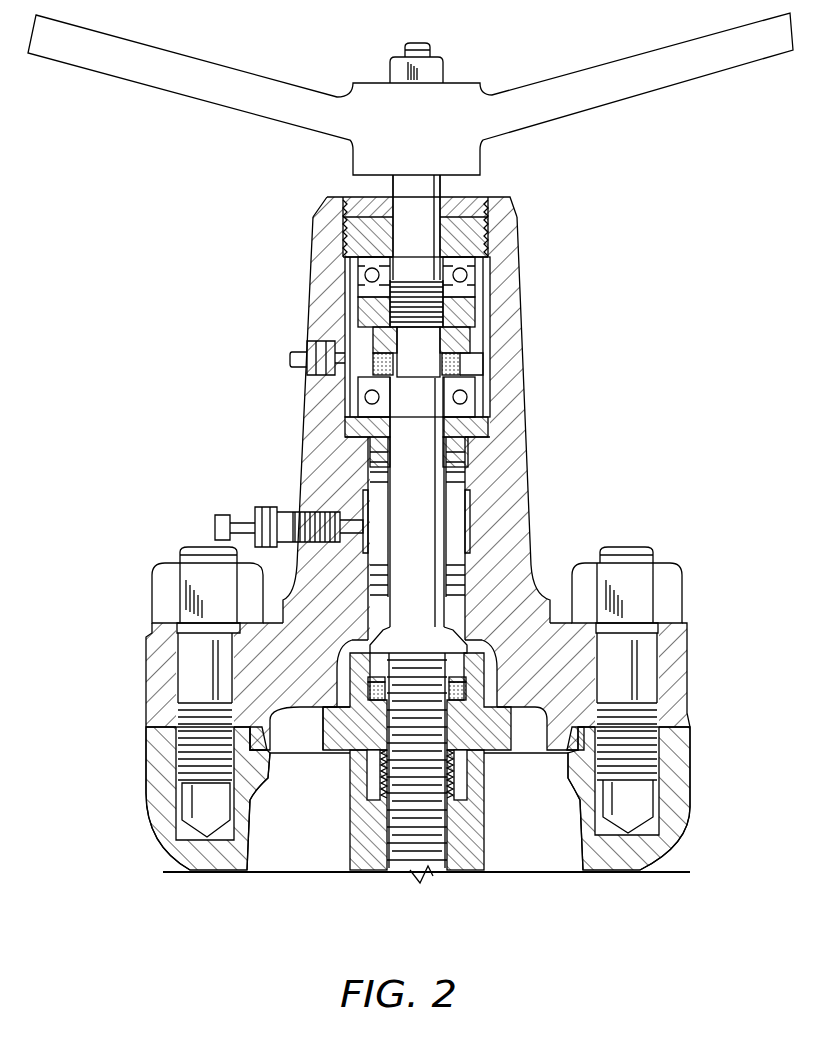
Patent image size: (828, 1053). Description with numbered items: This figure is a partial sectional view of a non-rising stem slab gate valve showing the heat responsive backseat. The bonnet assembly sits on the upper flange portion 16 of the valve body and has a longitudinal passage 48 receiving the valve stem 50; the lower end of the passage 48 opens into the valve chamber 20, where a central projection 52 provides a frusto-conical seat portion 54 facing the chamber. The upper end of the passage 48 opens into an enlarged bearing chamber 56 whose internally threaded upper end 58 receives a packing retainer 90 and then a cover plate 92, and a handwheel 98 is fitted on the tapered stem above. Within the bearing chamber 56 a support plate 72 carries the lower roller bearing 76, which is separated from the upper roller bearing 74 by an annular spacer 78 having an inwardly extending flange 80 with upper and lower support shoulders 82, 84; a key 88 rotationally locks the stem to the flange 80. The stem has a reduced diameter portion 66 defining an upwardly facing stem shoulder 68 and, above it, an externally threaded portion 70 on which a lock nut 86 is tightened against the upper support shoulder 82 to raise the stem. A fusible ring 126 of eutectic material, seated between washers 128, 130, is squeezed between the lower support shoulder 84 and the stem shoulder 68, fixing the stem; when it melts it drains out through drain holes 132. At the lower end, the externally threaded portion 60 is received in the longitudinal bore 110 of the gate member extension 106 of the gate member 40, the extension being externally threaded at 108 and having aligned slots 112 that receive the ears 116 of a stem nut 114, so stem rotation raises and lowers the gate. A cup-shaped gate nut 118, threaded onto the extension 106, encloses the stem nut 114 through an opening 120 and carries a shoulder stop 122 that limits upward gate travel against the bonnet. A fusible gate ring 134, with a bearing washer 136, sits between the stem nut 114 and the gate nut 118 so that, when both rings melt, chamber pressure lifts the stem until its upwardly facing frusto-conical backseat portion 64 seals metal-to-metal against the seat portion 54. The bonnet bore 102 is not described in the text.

The upper flange portion 16 is at (150, 785).
The valve chamber 20 is at (541, 855).
The gate member 40 is at (342, 873).
The longitudinal passage 48 is at (462, 478).
The valve stem 50 is at (428, 530).
The central projection 52 is at (530, 565).
The frusto-conical seat portion 54 is at (470, 660).
The enlarged bearing chamber 56 is at (487, 435).
The internally threaded upper end 58 is at (473, 197).
The externally threaded portion 60 is at (430, 817).
The frusto-conical backseat portion 64 is at (305, 515).
The reduced diameter portion 66 is at (428, 374).
The stem shoulder 68 is at (477, 367).
The externally threaded portion 70 is at (478, 298).
The support plate 72 is at (477, 447).
The upper roller bearing 74 is at (463, 263).
The lower roller bearing 76 is at (483, 397).
The annular spacer 78 is at (468, 315).
The inwardly extending flange 80 is at (462, 338).
The upper support shoulder 82 is at (390, 322).
The lower support shoulder 84 is at (377, 377).
The lock nut 86 is at (390, 310).
The key 88 is at (392, 336).
The packing retainer 90 is at (367, 233).
The cover plate 92 is at (357, 197).
The handwheel 98 is at (405, 135).
The bonnet bore 102 is at (460, 612).
The gate member extension 106 is at (475, 792).
The external threads 108 is at (350, 797).
The longitudinal bore 110 is at (428, 873).
The aligned slots 112 is at (505, 757).
The stem nut 114 is at (600, 750).
The ears 116 is at (370, 753).
The gate nut 118 is at (350, 727).
The opening 120 is at (367, 668).
The shoulder stop 122 is at (360, 690).
The fusible ring 126 is at (350, 378).
The washer 128 is at (390, 333).
The washer 130 is at (373, 413).
The drain holes 132 is at (463, 355).
The fusible gate ring 134 is at (470, 715).
The bearing washer 136 is at (467, 677).